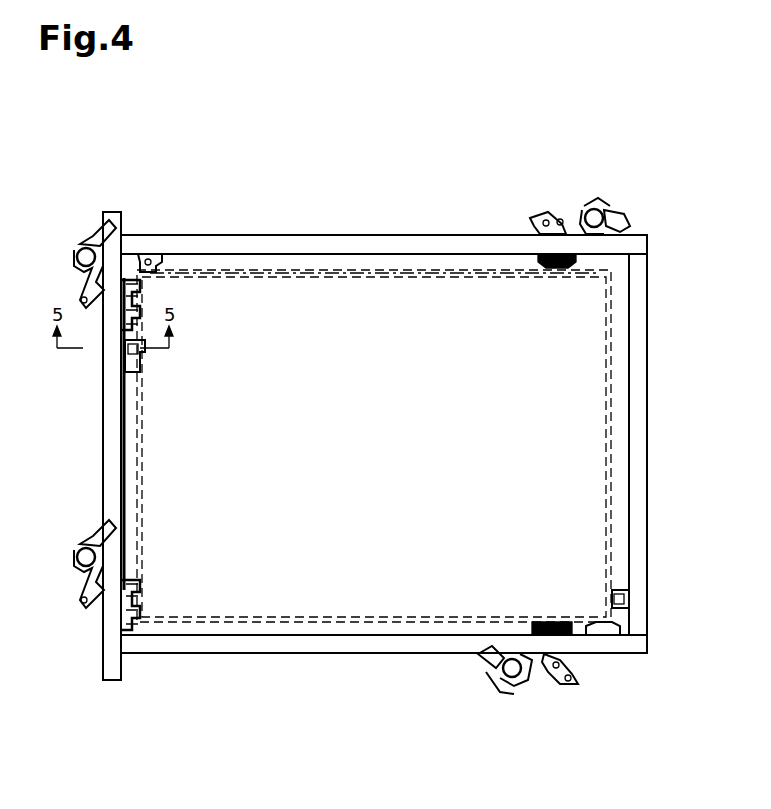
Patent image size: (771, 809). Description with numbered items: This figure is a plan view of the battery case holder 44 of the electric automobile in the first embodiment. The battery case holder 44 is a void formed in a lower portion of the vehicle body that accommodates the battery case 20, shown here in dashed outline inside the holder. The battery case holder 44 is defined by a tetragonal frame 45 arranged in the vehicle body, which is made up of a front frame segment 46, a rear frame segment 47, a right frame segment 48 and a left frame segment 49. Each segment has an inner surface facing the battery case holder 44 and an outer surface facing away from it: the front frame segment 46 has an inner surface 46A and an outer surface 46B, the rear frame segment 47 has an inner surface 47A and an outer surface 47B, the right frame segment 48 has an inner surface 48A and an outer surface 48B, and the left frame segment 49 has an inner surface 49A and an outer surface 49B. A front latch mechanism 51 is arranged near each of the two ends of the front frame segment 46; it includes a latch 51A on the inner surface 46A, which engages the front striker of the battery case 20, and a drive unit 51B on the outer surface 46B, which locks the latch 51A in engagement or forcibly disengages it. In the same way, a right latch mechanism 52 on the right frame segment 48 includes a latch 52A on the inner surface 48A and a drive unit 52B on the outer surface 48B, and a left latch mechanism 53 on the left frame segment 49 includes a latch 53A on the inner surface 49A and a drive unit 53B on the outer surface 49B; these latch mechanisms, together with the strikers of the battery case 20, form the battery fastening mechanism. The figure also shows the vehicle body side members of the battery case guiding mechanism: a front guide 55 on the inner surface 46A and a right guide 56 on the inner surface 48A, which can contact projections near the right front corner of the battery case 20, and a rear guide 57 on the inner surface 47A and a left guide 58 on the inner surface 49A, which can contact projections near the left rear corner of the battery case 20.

The battery case 20 is at (410, 270).
The battery case holder 44 is at (382, 453).
The tetragonal frame 45 is at (299, 234).
The front frame segment 46 is at (113, 401).
The inner surface of the front frame segment 46A is at (124, 478).
The outer surface of the front frame segment 46B is at (103, 435).
The rear frame segment 47 is at (638, 437).
The inner surface of the rear frame segment 47A is at (632, 378).
The outer surface of the rear frame segment 47B is at (648, 398).
The right frame segment 48 is at (350, 247).
The inner surface of the right frame segment 48A is at (207, 262).
The outer surface of the right frame segment 48B is at (250, 237).
The left frame segment 49 is at (325, 645).
The inner surface of the left frame segment 49A is at (234, 645).
The outer surface of the left frame segment 49B is at (208, 655).
The front latch mechanism 51 is at (95, 457).
The latch 51A is at (130, 283).
The drive unit 51B is at (86, 243).
The right latch mechanism 52 is at (559, 172).
The latch 52A is at (532, 262).
The drive unit 52B is at (565, 228).
The left latch mechanism 53 is at (537, 707).
The latch 53A is at (573, 640).
The drive unit 53B is at (524, 690).
The front guide 55 is at (128, 362).
The right guide 56 is at (152, 267).
The rear guide 57 is at (622, 590).
The left guide 58 is at (615, 628).